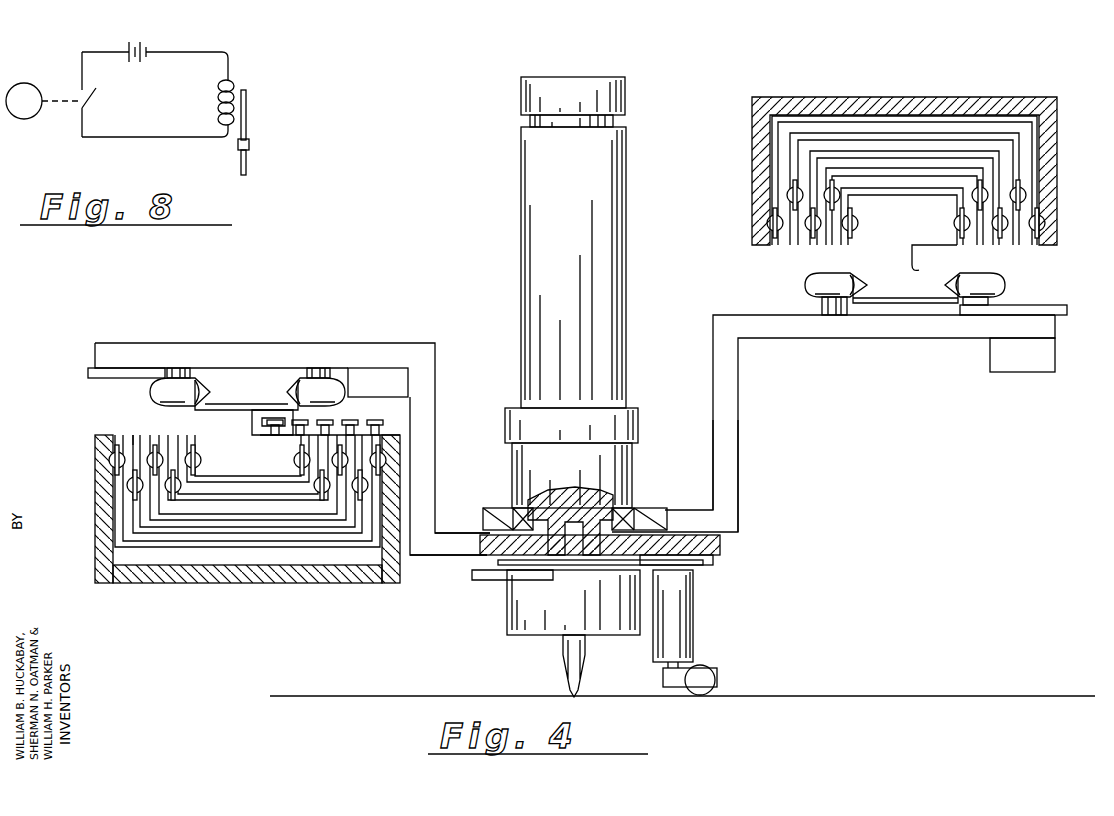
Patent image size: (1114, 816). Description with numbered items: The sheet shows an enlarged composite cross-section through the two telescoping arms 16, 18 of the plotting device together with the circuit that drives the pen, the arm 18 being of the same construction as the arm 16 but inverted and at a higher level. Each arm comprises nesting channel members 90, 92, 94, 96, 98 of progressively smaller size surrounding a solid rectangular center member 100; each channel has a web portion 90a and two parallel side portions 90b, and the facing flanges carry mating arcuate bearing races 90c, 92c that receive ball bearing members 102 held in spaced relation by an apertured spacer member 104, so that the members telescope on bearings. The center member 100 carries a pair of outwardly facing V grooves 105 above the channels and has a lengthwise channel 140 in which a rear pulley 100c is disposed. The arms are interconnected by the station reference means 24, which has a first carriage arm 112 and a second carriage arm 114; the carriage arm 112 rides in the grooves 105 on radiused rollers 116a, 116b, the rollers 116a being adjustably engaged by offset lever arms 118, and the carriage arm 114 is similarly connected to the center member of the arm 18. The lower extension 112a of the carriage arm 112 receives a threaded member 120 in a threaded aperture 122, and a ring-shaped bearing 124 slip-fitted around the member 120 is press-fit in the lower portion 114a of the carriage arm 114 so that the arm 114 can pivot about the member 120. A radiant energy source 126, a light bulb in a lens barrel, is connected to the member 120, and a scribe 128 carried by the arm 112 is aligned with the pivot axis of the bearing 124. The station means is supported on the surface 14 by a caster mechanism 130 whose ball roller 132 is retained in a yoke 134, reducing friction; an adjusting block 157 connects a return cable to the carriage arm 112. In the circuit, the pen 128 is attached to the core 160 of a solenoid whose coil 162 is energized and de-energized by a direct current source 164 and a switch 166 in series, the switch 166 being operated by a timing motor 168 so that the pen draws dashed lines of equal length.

In FIG. 4, the support surface 14 is at (770, 695).
In FIG. 4, the telescoping arm 16 is at (256, 525).
In FIG. 4, the telescoping arm 18 is at (888, 96).
In FIG. 4, the station reference means 24 is at (760, 529).
In FIG. 4, the channel member 90 is at (117, 434).
In FIG. 4, the web portion 90a is at (285, 585).
In FIG. 4, the side portion 90b is at (392, 560).
In FIG. 4, the bearing race 90c is at (105, 466).
In FIG. 4, the channel member 92 is at (134, 434).
In FIG. 4, the bearing race 92c is at (126, 434).
In FIG. 4, the channel member 94 is at (152, 434).
In FIG. 4, the channel member 96 is at (170, 434).
In FIG. 4, the channel member 98 is at (189, 434).
In FIG. 4, the center member 100 is at (230, 388).
In FIG. 4, the rear pulley 100c is at (300, 421).
In FIG. 4, the ball bearing members 102 is at (110, 468).
In FIG. 4, the spacer member 104 is at (113, 455).
In FIG. 4, the V grooves 105 is at (190, 368).
In FIG. 4, the carriage arm 112 is at (292, 436).
In FIG. 4, the lower extension 112a is at (483, 534).
In FIG. 4, the carriage arm 114 is at (833, 423).
In FIG. 4, the lower portion 114a is at (716, 490).
In FIG. 4, the radiused rollers 116a is at (160, 391).
In FIG. 4, the radiused rollers 116b is at (345, 391).
In FIG. 4, the offset lever arms 118 is at (90, 372).
In FIG. 4, the threaded member 120 is at (612, 510).
In FIG. 4, the threaded aperture 122 is at (625, 545).
In FIG. 4, the ring-shaped bearing 124 is at (516, 509).
In FIG. 4, the radiant energy source 126 is at (612, 348).
In FIG. 8, the scribe 128 is at (249, 166).
In FIG. 4, the scribe 128 is at (582, 673).
In FIG. 4, the caster mechanism 130 is at (682, 613).
In FIG. 4, the ball roller 132 is at (710, 668).
In FIG. 4, the yoke 134 is at (708, 681).
In FIG. 4, the channel 140 is at (252, 421).
In FIG. 4, the adjusting block 157 is at (410, 392).
In FIG. 8, the solenoid core 160 is at (248, 114).
In FIG. 8, the coil 162 is at (218, 107).
In FIG. 8, the direct current source 164 is at (146, 50).
In FIG. 8, the switch 166 is at (90, 100).
In FIG. 8, the timing motor 168 is at (28, 84).